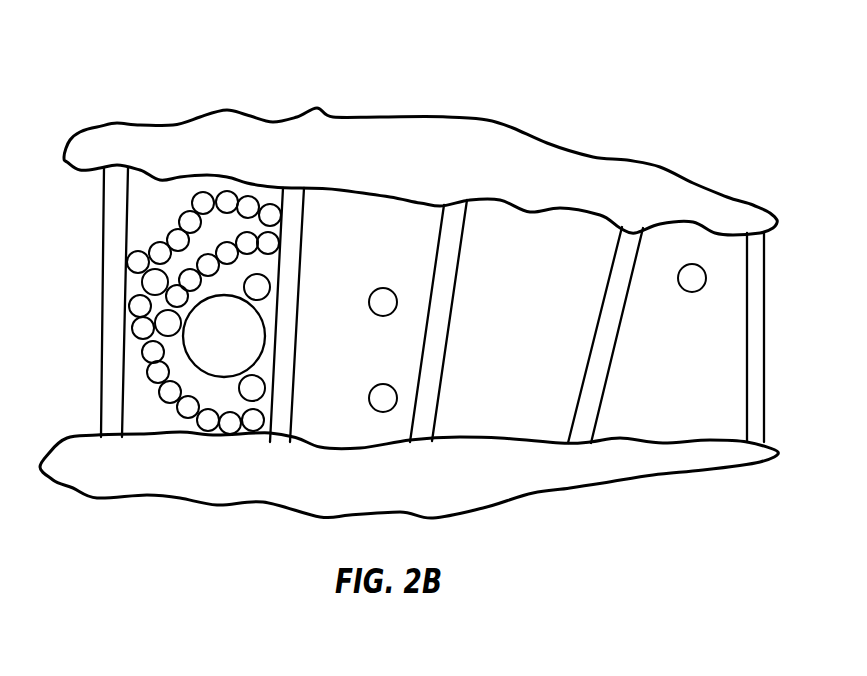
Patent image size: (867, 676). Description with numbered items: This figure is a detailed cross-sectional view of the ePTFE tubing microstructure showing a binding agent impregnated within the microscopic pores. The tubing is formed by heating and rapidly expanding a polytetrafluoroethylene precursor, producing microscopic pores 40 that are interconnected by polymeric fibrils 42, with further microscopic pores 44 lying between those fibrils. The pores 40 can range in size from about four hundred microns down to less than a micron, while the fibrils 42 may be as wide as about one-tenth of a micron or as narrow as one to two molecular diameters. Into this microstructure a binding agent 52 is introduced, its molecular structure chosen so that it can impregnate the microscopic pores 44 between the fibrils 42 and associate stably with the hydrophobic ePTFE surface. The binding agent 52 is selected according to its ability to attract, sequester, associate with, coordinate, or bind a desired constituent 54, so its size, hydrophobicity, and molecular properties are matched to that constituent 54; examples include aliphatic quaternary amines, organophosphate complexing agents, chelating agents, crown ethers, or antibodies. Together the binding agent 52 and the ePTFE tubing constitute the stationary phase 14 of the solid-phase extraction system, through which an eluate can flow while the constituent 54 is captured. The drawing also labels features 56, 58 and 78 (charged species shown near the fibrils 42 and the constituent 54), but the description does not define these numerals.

The stationary phase 14 is at (118, 100).
The microscopic pores 40 is at (462, 173).
The polymeric fibrils 42 is at (102, 272).
The microscopic pores 44 is at (178, 195).
The binding agent 52 is at (140, 284).
The desired constituent 54 is at (213, 347).
The bound chloride ions 56 is at (267, 277).
The hydrogen ions 58 is at (368, 387).
The free chloride ion 78 is at (393, 290).